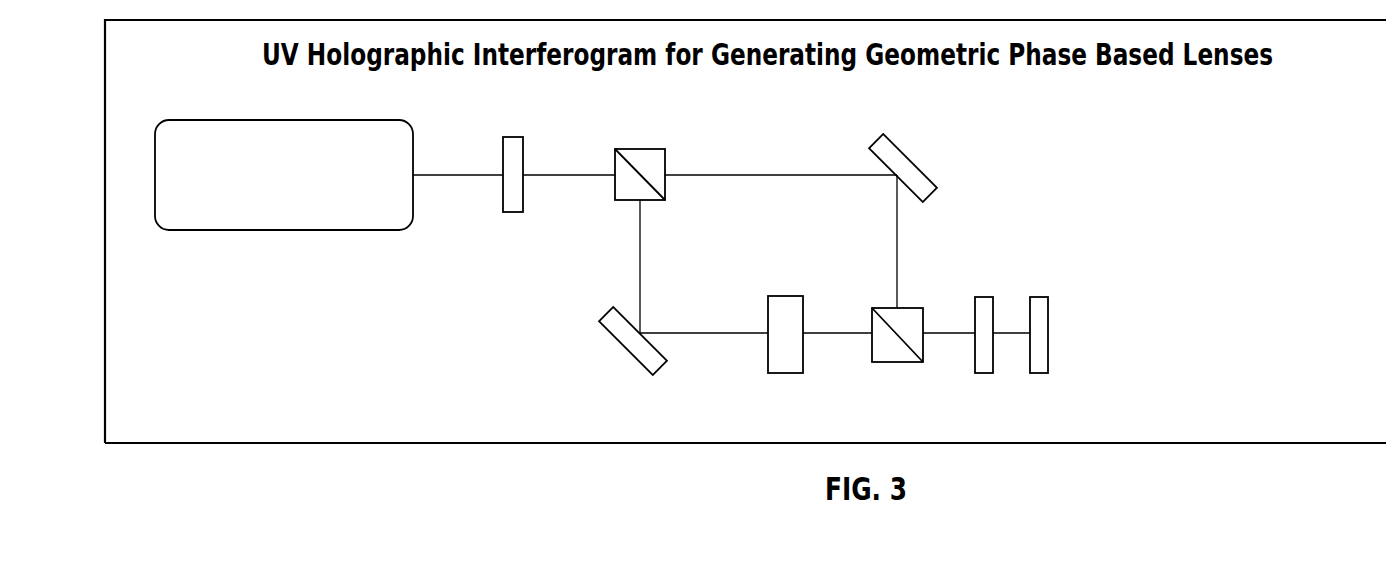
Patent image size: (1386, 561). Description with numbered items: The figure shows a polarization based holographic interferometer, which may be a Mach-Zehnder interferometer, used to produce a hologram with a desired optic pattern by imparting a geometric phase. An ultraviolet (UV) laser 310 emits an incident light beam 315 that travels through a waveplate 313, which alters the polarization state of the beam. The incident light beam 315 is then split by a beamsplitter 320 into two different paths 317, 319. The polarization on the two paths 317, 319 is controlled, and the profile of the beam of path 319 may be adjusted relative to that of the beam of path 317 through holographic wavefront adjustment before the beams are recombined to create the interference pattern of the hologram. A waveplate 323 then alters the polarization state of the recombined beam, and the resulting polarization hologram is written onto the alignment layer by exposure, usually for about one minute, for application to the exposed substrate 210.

The ultraviolet (UV) laser 310 is at (237, 118).
The waveplate 313 is at (513, 213).
The incident light beam 315 is at (580, 177).
The beamsplitter 320 is at (667, 160).
The path 317 is at (772, 173).
The path 319 is at (680, 335).
The waveplate 323 is at (980, 374).
The substrate 210 is at (1037, 374).